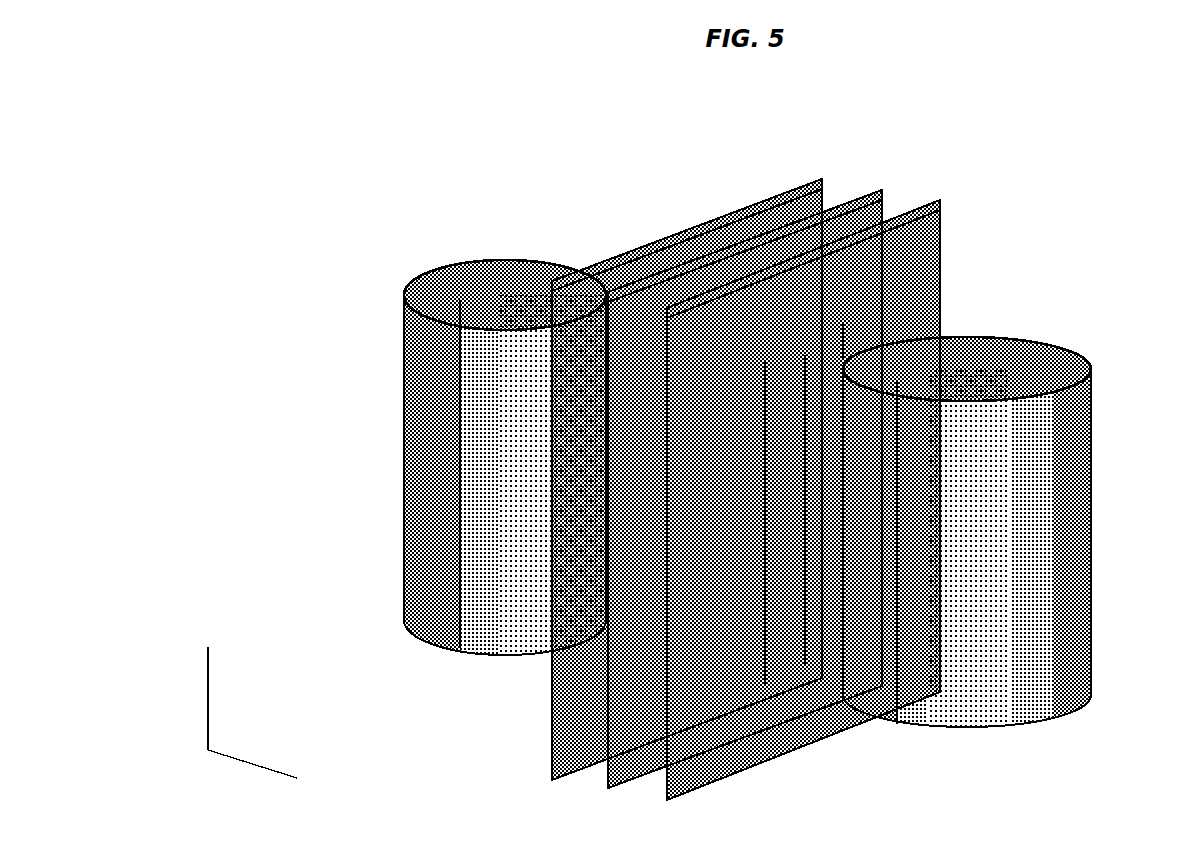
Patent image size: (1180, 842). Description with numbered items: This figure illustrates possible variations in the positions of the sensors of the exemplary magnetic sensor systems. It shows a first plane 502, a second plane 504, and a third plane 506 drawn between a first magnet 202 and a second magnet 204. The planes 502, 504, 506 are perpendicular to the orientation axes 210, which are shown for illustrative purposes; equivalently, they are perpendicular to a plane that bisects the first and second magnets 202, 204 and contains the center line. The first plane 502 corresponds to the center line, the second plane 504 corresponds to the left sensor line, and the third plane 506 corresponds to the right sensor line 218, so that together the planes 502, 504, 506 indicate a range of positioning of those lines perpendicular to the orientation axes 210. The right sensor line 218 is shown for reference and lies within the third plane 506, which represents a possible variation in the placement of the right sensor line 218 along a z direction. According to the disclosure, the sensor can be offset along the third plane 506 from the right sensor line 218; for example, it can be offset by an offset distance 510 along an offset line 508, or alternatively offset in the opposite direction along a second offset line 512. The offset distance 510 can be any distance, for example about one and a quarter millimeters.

The first magnet 202 is at (401, 457).
The second magnet 204 is at (1092, 573).
The orientation axes 210 is at (218, 765).
The right sensor line 218 is at (808, 354).
The first plane 502 is at (883, 192).
The second plane 504 is at (762, 202).
The third plane 506 is at (942, 227).
The offset line 508 is at (759, 442).
The offset distance 510 is at (838, 568).
The offset line 512 is at (841, 343).